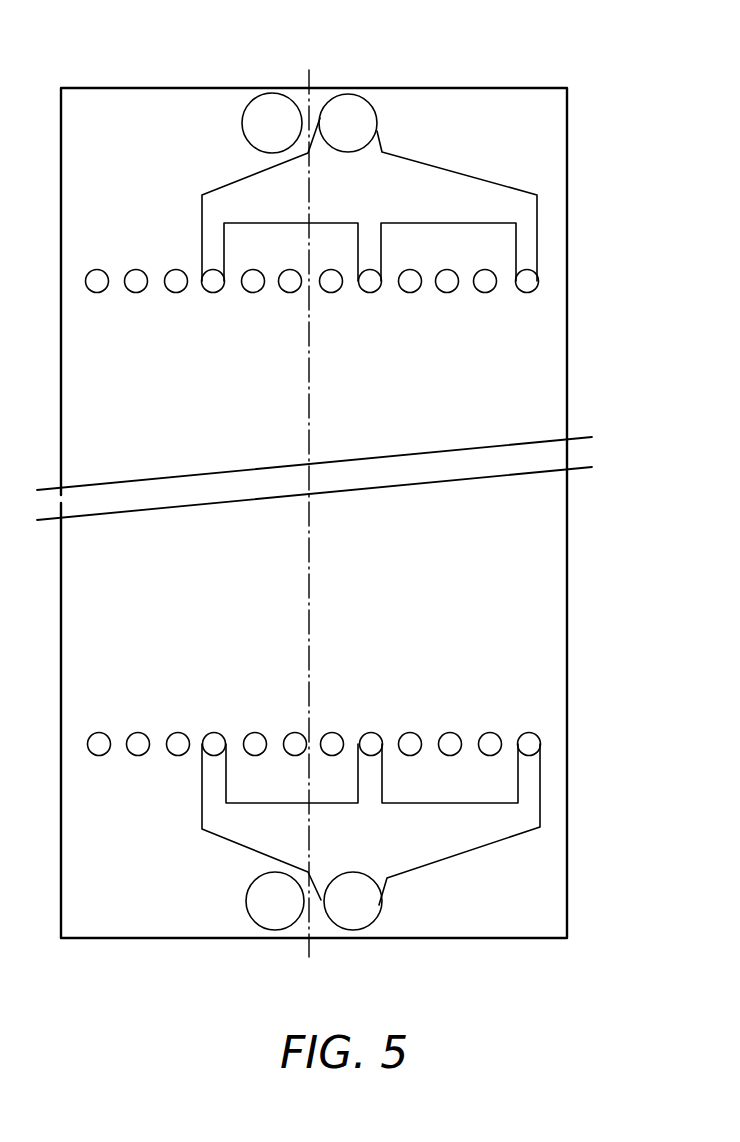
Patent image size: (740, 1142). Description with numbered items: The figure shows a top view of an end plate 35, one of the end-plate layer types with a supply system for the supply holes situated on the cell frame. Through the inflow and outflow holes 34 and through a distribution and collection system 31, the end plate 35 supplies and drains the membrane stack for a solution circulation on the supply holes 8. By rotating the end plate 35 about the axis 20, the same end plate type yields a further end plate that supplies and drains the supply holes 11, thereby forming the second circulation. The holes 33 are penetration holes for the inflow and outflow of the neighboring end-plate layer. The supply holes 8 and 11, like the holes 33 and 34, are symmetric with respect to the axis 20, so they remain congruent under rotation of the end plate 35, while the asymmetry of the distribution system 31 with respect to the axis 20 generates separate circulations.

The supply holes 8 is at (213, 286).
The supply holes 11 is at (98, 286).
The axis 20 is at (311, 74).
The distribution and collection system 31 is at (464, 198).
The penetration holes 33 is at (270, 120).
The inflow and outflow holes 34 is at (351, 120).
The end plate 35 is at (545, 130).